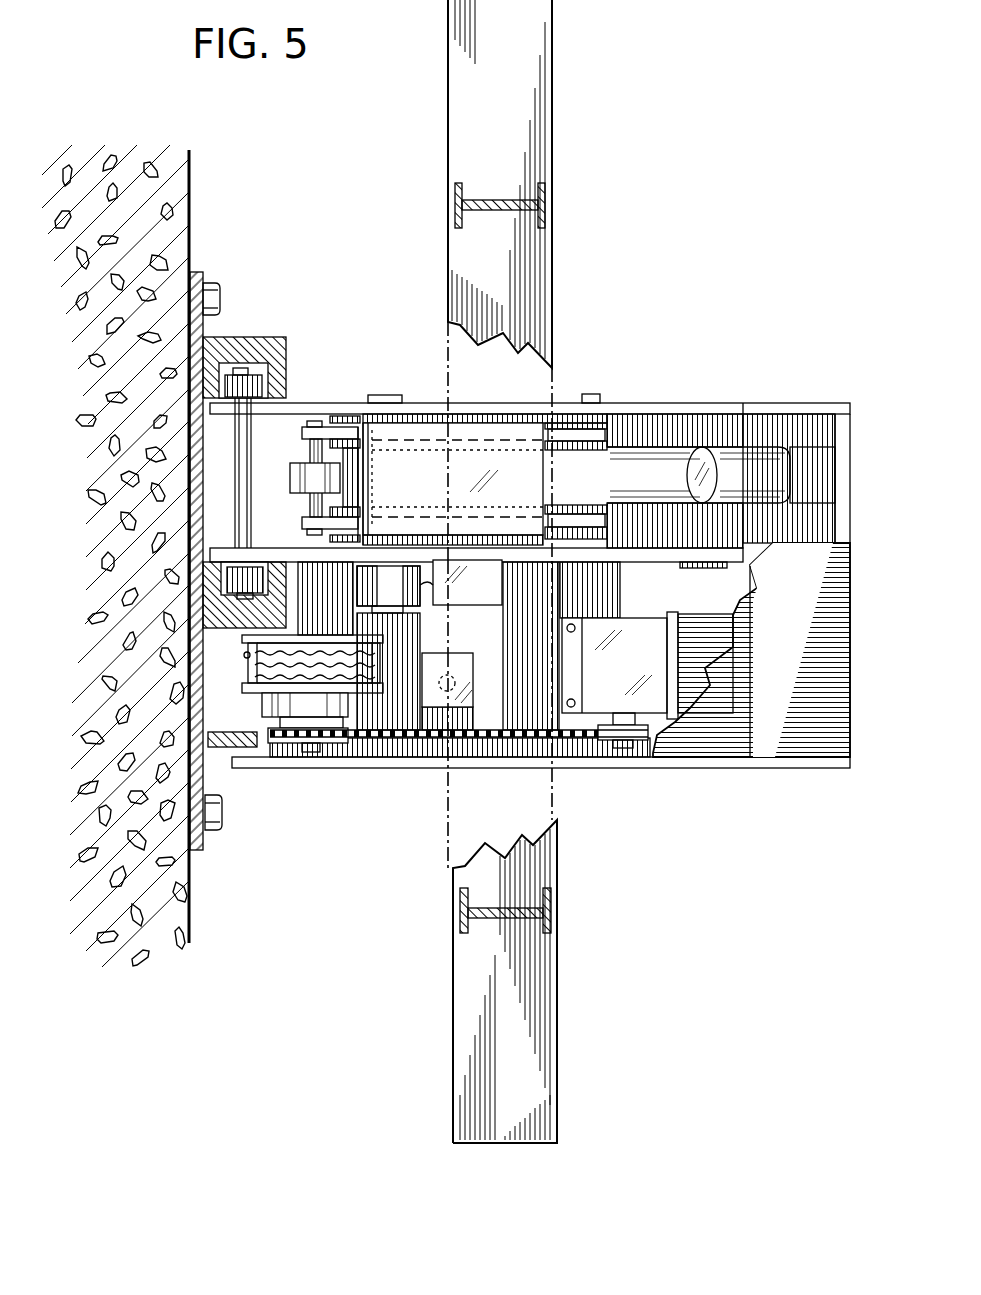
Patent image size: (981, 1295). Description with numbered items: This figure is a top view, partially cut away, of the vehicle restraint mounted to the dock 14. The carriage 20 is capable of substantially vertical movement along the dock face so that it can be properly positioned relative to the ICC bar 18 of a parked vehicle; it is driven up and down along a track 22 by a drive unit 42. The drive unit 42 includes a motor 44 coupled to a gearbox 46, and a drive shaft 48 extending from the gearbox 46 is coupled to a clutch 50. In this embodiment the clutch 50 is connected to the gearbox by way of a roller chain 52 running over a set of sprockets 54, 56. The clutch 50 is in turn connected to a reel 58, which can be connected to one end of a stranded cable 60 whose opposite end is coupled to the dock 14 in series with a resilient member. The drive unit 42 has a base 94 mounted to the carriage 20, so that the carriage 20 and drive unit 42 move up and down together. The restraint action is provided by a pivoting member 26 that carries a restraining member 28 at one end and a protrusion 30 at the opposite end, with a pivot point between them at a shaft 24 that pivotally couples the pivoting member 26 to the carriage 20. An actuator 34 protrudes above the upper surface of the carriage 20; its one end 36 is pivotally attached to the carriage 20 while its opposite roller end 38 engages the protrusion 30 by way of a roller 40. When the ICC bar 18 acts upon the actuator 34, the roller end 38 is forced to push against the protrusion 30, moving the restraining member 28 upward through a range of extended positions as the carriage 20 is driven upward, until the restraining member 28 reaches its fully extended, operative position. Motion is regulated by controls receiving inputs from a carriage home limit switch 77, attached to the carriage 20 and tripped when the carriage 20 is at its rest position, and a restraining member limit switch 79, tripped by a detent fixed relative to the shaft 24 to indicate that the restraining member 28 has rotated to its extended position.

The dock 14 is at (190, 252).
The ICC bar 18 is at (448, 278).
The carriage 20 is at (708, 402).
The track 22 is at (286, 356).
The shaft 24 is at (386, 394).
The pivoting member 26 is at (620, 447).
The restraining member 28 is at (750, 447).
The protrusion 30 is at (304, 498).
The actuator 34 is at (552, 488).
The actuator end 36 is at (592, 393).
The roller end 38 is at (311, 426).
The roller 40 is at (290, 476).
The drive unit 42 is at (668, 612).
The motor 44 is at (708, 613).
The gearbox 46 is at (630, 681).
The drive shaft 48 is at (618, 745).
The clutch 50 is at (265, 700).
The roller chain 52 is at (510, 745).
The sprocket 54 is at (278, 750).
The sprocket 56 is at (630, 748).
The reel 58 is at (252, 679).
The stranded cable 60 is at (244, 655).
The carriage home limit switch 77 is at (467, 682).
The restraining member limit switch 79 is at (465, 605).
The base 94 is at (560, 655).